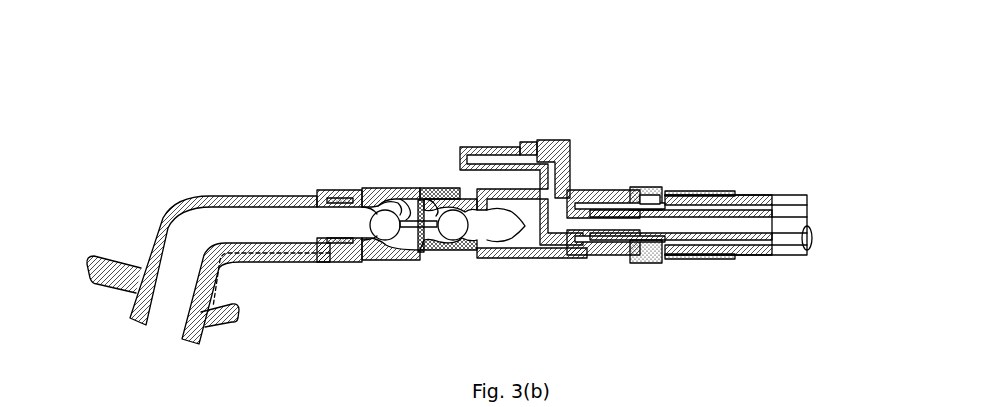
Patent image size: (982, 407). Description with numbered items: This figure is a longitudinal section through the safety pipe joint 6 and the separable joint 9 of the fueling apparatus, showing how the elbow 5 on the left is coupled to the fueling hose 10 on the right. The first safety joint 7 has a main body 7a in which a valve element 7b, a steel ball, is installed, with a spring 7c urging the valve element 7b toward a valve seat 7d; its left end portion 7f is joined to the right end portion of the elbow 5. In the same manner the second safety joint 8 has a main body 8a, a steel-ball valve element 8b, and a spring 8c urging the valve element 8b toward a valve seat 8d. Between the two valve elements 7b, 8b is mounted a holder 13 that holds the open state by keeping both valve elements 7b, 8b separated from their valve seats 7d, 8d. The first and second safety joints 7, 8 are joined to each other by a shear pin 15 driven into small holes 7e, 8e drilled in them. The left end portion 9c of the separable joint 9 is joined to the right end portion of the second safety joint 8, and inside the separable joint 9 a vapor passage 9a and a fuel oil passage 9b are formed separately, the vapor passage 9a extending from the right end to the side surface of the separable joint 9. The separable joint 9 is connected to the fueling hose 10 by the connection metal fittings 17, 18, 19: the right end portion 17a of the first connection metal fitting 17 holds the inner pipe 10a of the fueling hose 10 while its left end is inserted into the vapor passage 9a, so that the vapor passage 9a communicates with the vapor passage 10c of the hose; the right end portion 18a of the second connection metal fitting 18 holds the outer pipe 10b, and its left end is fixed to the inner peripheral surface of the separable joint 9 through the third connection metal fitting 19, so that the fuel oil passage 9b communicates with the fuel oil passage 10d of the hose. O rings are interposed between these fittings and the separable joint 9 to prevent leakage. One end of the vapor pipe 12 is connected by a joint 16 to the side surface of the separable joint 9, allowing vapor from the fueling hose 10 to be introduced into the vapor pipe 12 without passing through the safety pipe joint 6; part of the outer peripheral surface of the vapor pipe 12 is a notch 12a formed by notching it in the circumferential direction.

The elbow 5 is at (230, 196).
The safety pipe joint 6 is at (395, 90).
The first safety joint 7 is at (377, 189).
The main body 7a is at (358, 192).
The valve element 7b is at (383, 255).
The spring 7c is at (330, 240).
The valve seat 7d is at (397, 207).
The small hole 7e is at (407, 198).
The left end portion 7f is at (333, 200).
The second safety joint 8 is at (452, 260).
The main body 8a is at (458, 188).
The valve element 8b is at (457, 240).
The spring 8c is at (477, 258).
The valve seat 8d is at (437, 258).
The small hole 8e is at (450, 190).
The separable joint 9 is at (610, 188).
The vapor passage 9a is at (578, 188).
The fuel oil passage 9b is at (543, 258).
The left end portion 9c is at (517, 253).
The fueling hose 10 is at (763, 195).
The inner pipe 10a is at (757, 255).
The outer pipe 10b is at (750, 195).
The vapor passage 10c is at (767, 222).
The fuel oil passage 10d is at (747, 255).
The vapor pipe 12 is at (477, 147).
The notch 12a is at (503, 147).
The holder 13 is at (388, 233).
The shear pin 15 is at (430, 190).
The joint 16 is at (553, 138).
The first connection metal fitting 17 is at (593, 258).
The right end portion 17a is at (650, 184).
The second connection metal fitting 18 is at (697, 259).
The right end portion 18a is at (718, 259).
The third connection metal fitting 19 is at (647, 263).